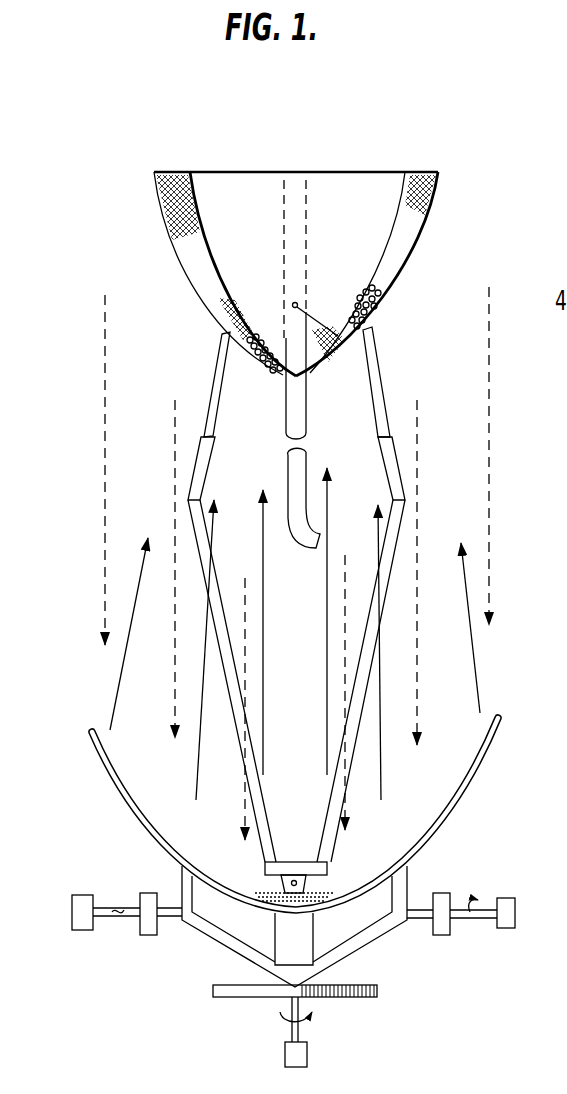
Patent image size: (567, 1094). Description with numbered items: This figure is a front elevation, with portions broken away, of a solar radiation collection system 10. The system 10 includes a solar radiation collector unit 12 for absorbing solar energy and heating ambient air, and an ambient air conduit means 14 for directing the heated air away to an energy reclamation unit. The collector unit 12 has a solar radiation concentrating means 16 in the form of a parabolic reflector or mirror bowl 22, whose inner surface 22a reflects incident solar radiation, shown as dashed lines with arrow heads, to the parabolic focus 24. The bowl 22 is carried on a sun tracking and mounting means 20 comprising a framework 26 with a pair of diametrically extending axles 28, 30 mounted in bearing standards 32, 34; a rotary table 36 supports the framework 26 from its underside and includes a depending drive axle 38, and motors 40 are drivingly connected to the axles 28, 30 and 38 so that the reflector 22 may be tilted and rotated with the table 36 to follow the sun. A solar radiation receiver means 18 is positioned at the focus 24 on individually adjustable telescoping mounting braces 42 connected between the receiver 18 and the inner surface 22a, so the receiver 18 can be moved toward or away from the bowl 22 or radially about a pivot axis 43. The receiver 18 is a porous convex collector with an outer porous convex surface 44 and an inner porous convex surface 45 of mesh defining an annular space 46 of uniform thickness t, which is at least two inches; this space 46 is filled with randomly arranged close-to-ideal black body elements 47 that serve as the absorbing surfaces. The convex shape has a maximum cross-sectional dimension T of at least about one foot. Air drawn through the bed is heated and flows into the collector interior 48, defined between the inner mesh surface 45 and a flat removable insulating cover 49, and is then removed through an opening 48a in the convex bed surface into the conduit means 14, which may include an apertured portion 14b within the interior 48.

The solar radiation collection system 10 is at (200, 986).
The solar radiation collector unit 12 is at (434, 200).
The ambient air conduit means 14 is at (288, 414).
The apertured portion 14b is at (289, 191).
The solar radiation concentrating means 16 is at (483, 775).
The solar radiation receiver means 18 is at (414, 234).
The sun tracking and mounting means 20 is at (382, 942).
The parabolic reflector or mirror bowl 22 is at (447, 822).
The inner surface 22a is at (453, 790).
The parabolic focus 24 is at (364, 338).
The framework 26 is at (217, 938).
The axle 28 is at (165, 906).
The axle 30 is at (424, 906).
The bearing standard 32 is at (142, 900).
The bearing standard 34 is at (446, 896).
The rotary table 36 is at (365, 999).
The drive axle 38 is at (288, 1002).
The motor 40 is at (84, 902).
The telescoping mounting brace 42 is at (218, 586).
The pivot axis 43 is at (300, 883).
The outer porous convex surface 44 is at (392, 280).
The inner porous convex surface 45 is at (380, 232).
The annular space 46 is at (402, 257).
The black body elements 47 is at (274, 326).
The collector interior 48 is at (344, 262).
The opening 48a is at (298, 365).
The removable insulating cover 49 is at (250, 173).
The maximum cross-sectional dimension T is at (438, 136).
The space between inner and outer surfaces t is at (186, 263).